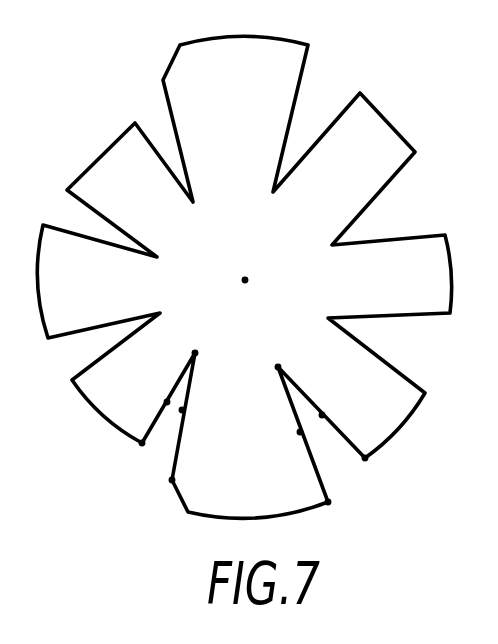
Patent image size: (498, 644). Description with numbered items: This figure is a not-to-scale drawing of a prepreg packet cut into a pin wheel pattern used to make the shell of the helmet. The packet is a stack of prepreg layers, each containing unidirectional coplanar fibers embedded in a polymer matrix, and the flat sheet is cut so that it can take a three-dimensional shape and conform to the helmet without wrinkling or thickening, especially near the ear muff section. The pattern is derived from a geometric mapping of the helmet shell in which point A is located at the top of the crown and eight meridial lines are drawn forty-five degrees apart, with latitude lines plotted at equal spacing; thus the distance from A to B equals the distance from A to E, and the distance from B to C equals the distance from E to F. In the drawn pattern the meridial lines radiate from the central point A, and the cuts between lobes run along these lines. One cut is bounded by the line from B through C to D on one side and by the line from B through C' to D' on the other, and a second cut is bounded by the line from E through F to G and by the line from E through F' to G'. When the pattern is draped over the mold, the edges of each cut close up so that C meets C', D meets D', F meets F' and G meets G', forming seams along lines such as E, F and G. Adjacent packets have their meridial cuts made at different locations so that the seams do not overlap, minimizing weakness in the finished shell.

The point at top of crown A is at (256, 264).
The latitude point on meridial line B is at (196, 340).
The latitude point on meridial line C is at (157, 397).
The latitude point on adjacent cut edge C' is at (196, 410).
The latitude point on meridial line D is at (136, 457).
The latitude point on adjacent cut edge D' is at (159, 487).
The latitude point on meridial line E is at (277, 352).
The latitude point on meridial line F is at (287, 435).
The latitude point on adjacent cut edge F' is at (333, 401).
The latitude point on meridial line G is at (338, 500).
The latitude point on adjacent cut edge G' is at (367, 471).